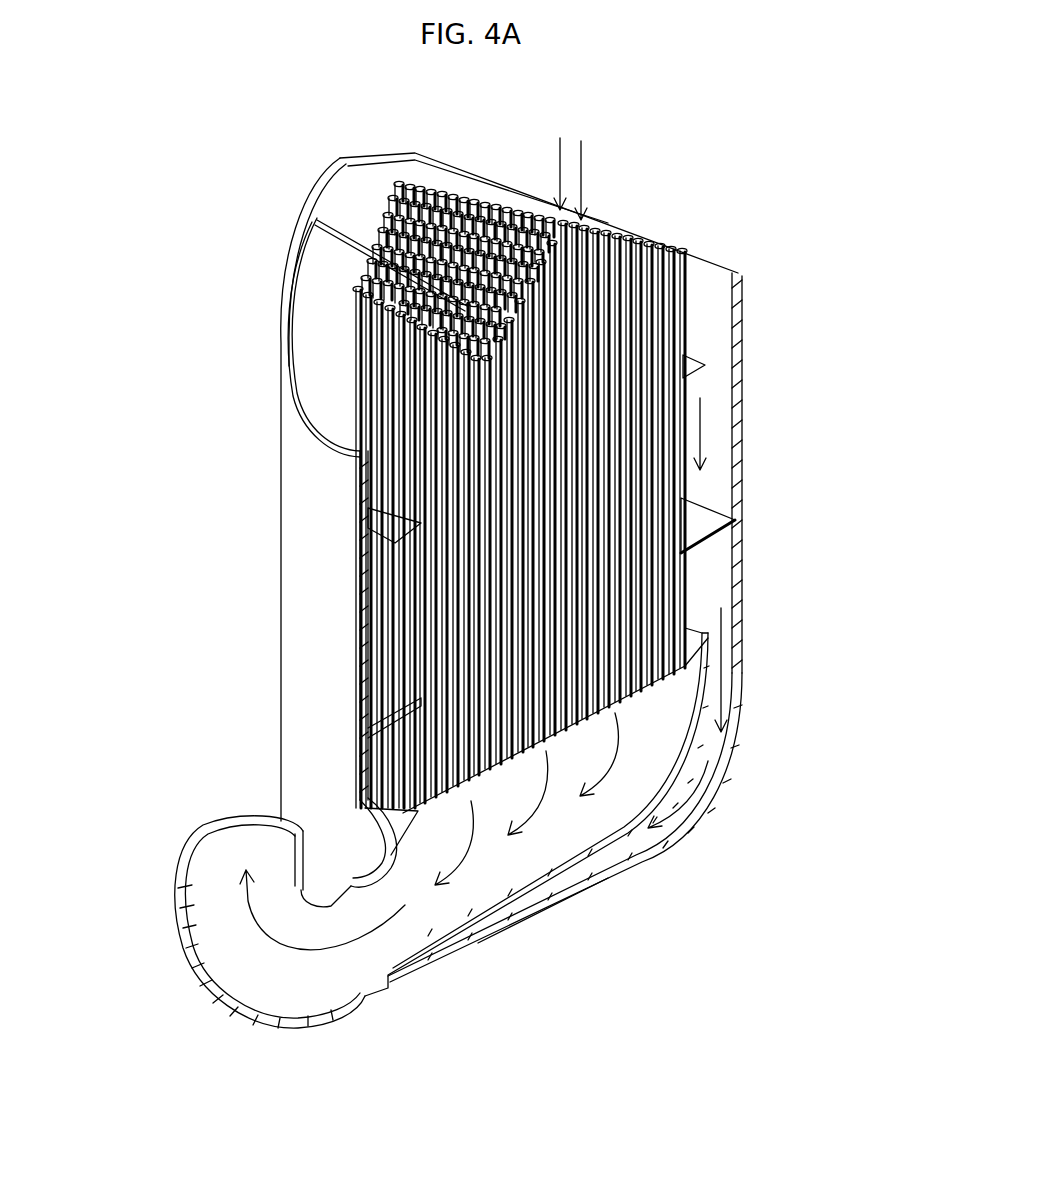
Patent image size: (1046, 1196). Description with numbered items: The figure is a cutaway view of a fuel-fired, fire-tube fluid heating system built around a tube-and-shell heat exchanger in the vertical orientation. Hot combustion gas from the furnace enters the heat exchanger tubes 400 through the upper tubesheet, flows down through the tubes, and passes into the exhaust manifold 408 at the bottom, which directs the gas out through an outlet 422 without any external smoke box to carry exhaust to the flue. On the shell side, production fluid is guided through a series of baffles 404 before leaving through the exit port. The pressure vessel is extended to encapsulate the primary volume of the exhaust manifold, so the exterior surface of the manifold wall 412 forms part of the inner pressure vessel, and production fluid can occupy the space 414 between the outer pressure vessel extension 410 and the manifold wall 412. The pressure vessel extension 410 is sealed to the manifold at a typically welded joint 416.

The heat exchanger tubes 400 is at (600, 213).
The baffles 404 is at (700, 497).
The exhaust manifold 408 is at (655, 740).
The outer pressure vessel extension 410 is at (680, 817).
The manifold wall 412 is at (605, 843).
The space 414 is at (535, 908).
The joint 416 is at (390, 970).
The outlet 422 is at (197, 817).